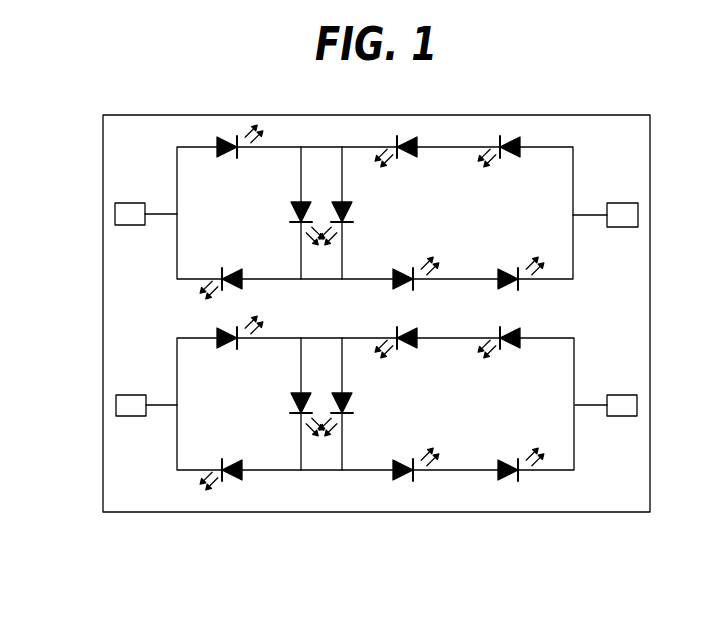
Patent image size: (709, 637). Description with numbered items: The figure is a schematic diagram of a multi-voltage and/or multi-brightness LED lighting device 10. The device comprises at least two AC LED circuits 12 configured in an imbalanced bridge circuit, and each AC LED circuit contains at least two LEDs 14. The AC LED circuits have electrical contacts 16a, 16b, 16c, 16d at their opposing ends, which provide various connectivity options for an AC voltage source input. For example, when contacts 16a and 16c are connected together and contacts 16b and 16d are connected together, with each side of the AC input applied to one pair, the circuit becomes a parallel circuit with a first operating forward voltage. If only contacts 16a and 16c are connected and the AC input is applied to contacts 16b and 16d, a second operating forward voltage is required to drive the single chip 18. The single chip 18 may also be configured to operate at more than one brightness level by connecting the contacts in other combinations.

The multi-voltage and/or multi-brightness LED lighting device 10 is at (570, 92).
The AC LED circuit 12 is at (596, 268).
The LED 14 is at (227, 140).
The electrical contact 16a is at (130, 203).
The electrical contact 16b is at (622, 203).
The electrical contact 16c is at (130, 416).
The electrical contact 16d is at (622, 416).
The single chip 18 is at (115, 115).